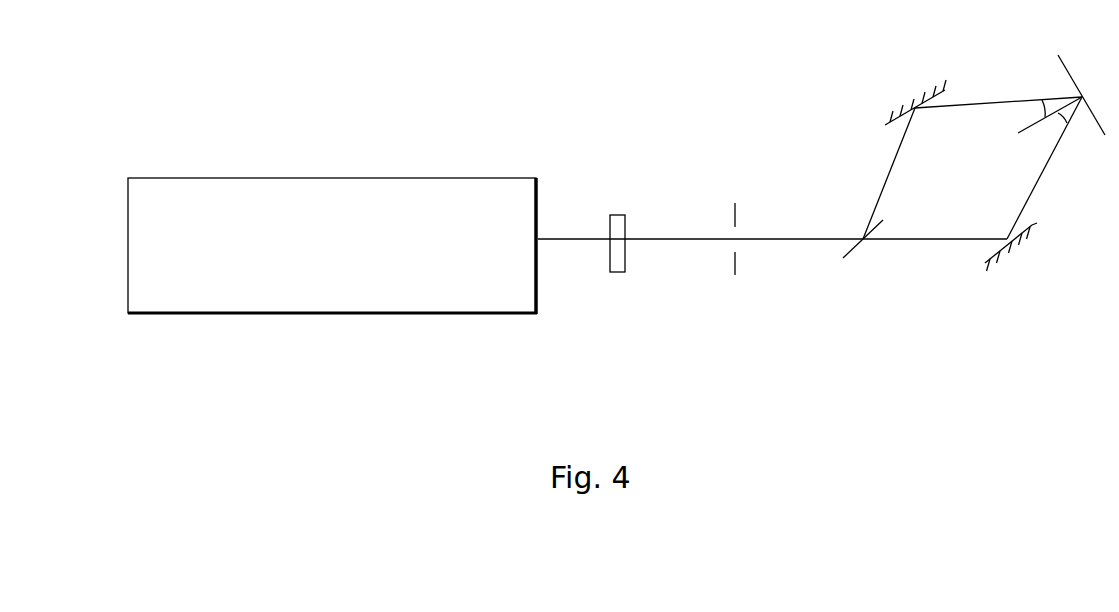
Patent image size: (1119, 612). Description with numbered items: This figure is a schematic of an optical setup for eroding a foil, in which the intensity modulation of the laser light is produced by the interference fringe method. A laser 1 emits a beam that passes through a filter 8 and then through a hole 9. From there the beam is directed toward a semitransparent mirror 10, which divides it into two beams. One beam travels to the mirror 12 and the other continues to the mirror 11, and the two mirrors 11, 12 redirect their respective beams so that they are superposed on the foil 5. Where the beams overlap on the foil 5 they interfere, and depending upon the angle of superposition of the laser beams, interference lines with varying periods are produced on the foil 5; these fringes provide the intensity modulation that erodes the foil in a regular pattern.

The laser 1 is at (361, 299).
The foil 5 is at (1077, 85).
The filter 8 is at (617, 272).
The hole 9 is at (735, 275).
The semitransparent mirror 10 is at (855, 247).
The mirror 11 is at (1003, 248).
The mirror 12 is at (895, 123).